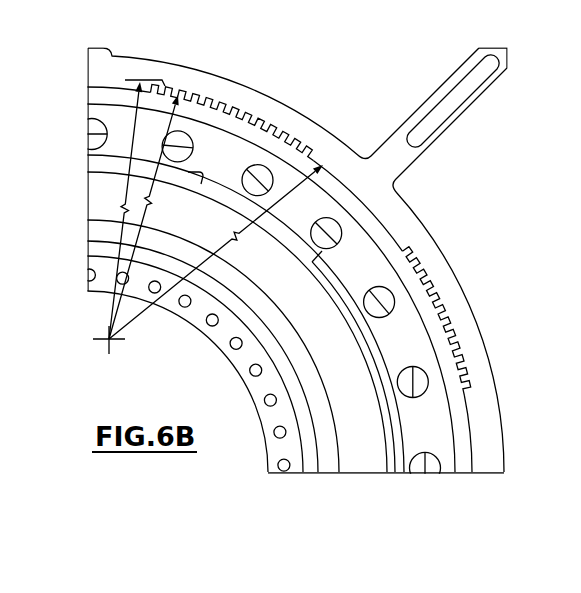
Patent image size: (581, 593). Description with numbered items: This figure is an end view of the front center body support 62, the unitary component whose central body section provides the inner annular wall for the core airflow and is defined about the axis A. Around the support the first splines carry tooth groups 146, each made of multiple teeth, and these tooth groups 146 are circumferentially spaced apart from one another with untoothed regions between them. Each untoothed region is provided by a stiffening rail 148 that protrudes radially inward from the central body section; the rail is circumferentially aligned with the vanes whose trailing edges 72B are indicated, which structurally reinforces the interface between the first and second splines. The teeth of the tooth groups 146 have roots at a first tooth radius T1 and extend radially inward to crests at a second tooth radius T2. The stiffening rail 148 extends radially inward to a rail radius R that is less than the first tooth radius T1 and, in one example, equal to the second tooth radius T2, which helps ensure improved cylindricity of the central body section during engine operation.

The front center body support 62 is at (320, 259).
The tooth groups 146 is at (272, 97).
The stiffening rail 148 is at (397, 243).
The trailing edge 72B is at (471, 104).
The first tooth radius T1 is at (127, 190).
The second tooth radius T2 is at (172, 174).
The rail radius R is at (275, 226).
The axis A is at (106, 341).